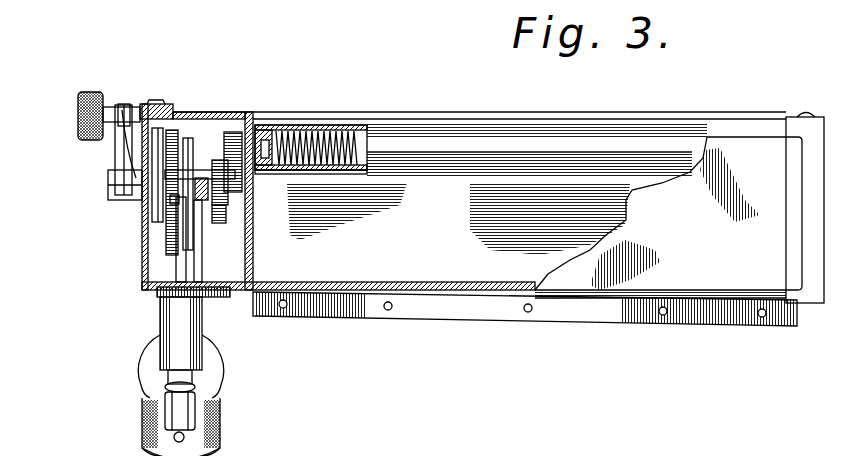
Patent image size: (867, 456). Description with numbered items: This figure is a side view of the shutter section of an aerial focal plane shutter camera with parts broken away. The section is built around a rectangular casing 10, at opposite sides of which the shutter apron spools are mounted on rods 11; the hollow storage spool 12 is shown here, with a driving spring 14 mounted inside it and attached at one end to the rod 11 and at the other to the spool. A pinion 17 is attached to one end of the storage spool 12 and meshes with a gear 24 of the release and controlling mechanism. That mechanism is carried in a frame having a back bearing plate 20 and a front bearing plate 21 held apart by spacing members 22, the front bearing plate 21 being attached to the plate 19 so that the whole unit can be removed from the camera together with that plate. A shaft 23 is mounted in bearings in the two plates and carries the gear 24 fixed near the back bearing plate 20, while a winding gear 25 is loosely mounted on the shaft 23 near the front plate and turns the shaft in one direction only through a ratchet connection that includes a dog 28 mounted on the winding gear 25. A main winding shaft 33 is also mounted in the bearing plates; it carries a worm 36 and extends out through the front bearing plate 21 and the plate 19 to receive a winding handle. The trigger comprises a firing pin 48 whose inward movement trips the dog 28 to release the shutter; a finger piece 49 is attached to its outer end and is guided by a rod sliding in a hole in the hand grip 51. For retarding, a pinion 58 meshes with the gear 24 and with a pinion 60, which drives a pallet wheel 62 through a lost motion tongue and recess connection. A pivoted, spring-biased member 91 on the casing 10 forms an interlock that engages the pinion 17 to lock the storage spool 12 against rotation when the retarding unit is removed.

The casing 10 is at (483, 220).
The rod 11 is at (328, 135).
The storage spool 12 is at (353, 127).
The driving spring 14 is at (337, 174).
The pinion 17 is at (233, 133).
The plate 19 is at (145, 227).
The back bearing plate 20 is at (250, 225).
The front bearing plate 21 is at (152, 210).
The spacing member 22 is at (170, 135).
The shaft 23 is at (204, 168).
The gear 24 is at (235, 186).
The winding gear 25 is at (160, 148).
The dog 28 is at (175, 203).
The main winding shaft 33 is at (108, 192).
The worm 36 is at (232, 203).
The firing pin 48 is at (178, 255).
The finger piece 49 is at (208, 402).
The hand grip 51 is at (147, 400).
The pinion 58 is at (208, 200).
The pinion 60 is at (218, 223).
The pallet wheel 62 is at (197, 217).
The member 91 is at (250, 113).